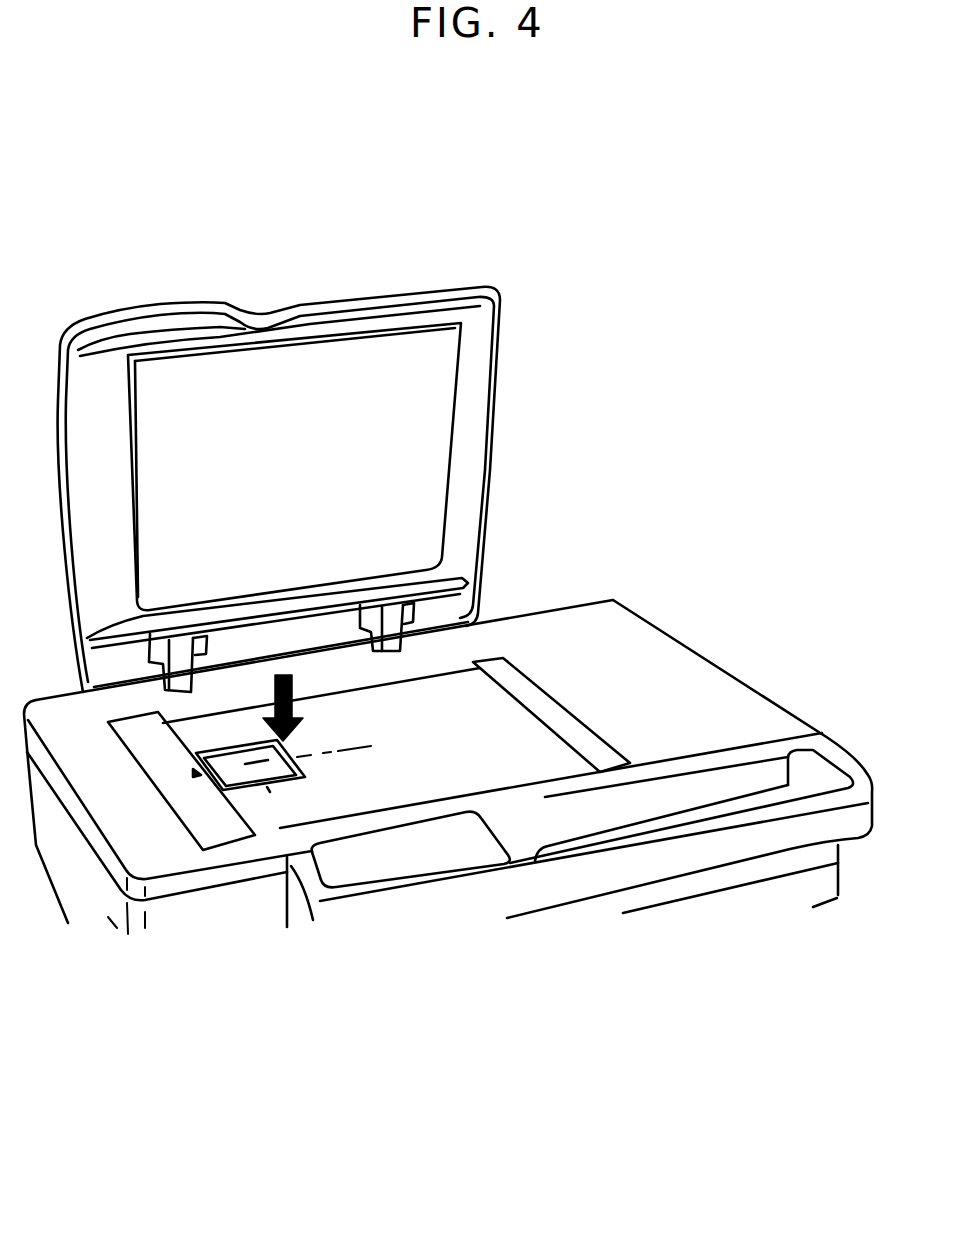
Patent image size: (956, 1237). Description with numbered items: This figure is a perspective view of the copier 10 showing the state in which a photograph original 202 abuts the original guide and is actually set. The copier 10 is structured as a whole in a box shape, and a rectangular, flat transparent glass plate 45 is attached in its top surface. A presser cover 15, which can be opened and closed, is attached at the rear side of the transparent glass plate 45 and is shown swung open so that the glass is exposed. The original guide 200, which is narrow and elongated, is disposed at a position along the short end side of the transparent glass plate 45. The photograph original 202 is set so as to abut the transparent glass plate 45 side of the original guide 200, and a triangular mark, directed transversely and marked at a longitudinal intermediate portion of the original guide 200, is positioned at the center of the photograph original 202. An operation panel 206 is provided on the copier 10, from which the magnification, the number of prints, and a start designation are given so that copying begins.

The copier 10 is at (727, 620).
The presser cover 15 is at (492, 450).
The transparent glass plate 45 is at (497, 711).
The original guide 200 is at (238, 833).
The photograph original 202 is at (277, 838).
The operation panel 206 is at (647, 810).